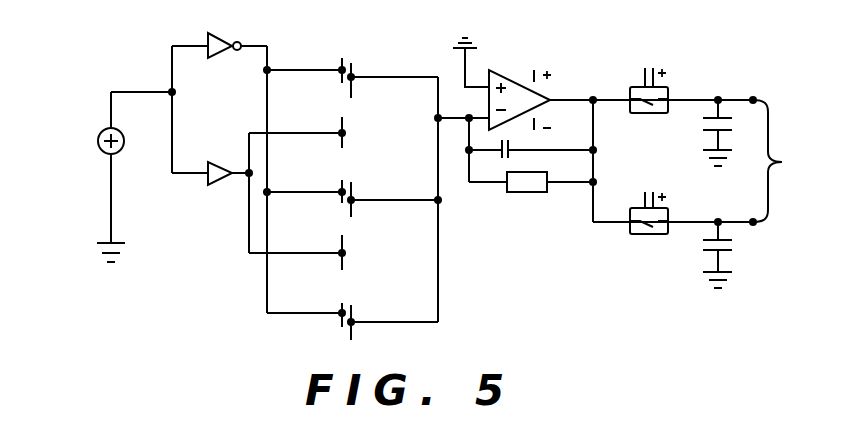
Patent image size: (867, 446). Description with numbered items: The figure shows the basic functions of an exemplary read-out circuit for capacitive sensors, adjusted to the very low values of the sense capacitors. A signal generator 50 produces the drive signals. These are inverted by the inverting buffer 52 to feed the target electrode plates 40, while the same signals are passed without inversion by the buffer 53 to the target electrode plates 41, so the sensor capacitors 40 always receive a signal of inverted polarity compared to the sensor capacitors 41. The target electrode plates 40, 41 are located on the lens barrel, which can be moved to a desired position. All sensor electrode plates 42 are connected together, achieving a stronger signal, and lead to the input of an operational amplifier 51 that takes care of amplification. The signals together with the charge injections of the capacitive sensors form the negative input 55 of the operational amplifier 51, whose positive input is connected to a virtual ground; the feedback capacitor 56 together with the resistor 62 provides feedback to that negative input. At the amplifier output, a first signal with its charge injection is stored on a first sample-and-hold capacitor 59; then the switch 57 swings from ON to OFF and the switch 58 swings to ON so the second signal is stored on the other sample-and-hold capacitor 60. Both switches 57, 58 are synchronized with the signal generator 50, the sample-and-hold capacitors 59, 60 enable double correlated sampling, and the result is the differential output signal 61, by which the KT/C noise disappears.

The target electrode plates 40 is at (341, 59).
The target electrode plates 41 is at (341, 118).
The sensor electrode plates 42 is at (351, 92).
The signal generator 50 is at (124, 139).
The operational amplifier 51 is at (517, 78).
The inverting buffer 52 is at (226, 58).
The buffer 53 is at (226, 185).
The negative input 55 is at (457, 120).
The feedback capacitor 56 is at (500, 153).
The switch 57 is at (668, 94).
The switch 58 is at (668, 216).
The sample-and-hold capacitor 59 is at (698, 122).
The sample-and-hold capacitor 60 is at (698, 244).
The differential output signal 61 is at (784, 161).
The resistor 62 is at (522, 192).